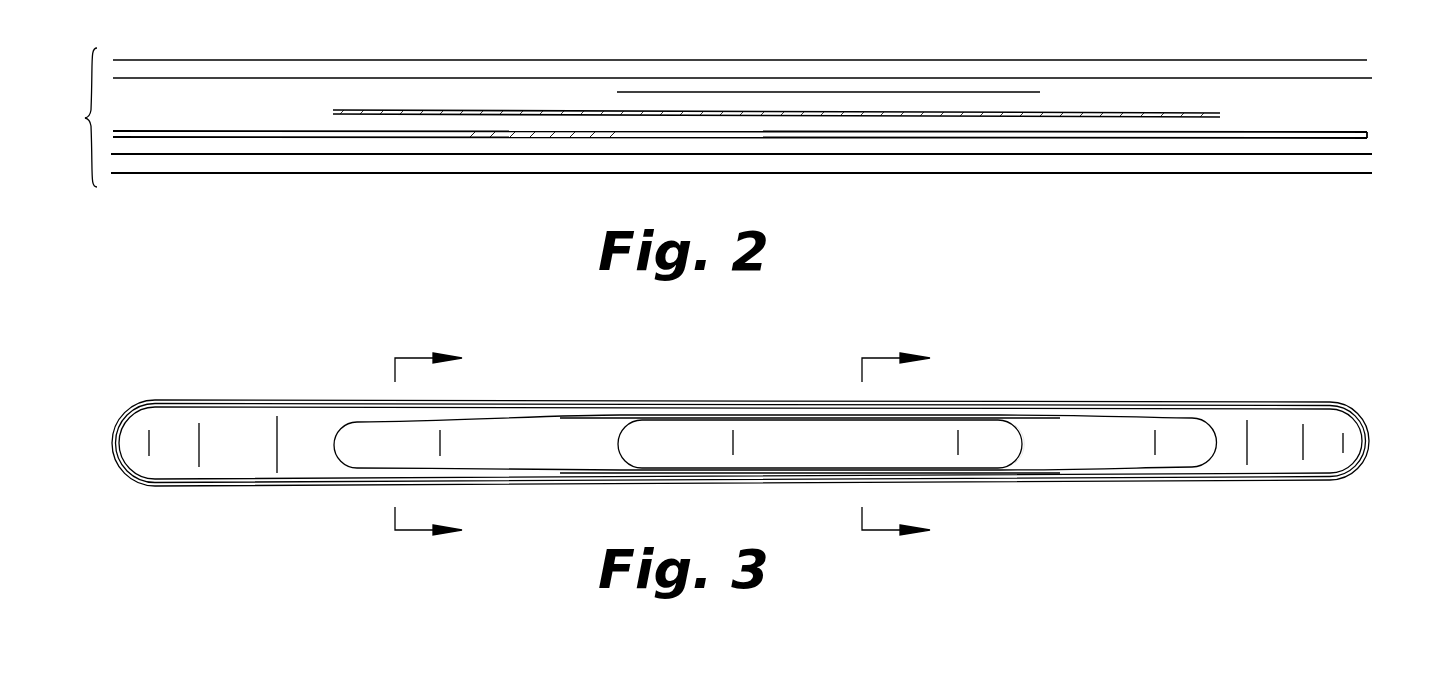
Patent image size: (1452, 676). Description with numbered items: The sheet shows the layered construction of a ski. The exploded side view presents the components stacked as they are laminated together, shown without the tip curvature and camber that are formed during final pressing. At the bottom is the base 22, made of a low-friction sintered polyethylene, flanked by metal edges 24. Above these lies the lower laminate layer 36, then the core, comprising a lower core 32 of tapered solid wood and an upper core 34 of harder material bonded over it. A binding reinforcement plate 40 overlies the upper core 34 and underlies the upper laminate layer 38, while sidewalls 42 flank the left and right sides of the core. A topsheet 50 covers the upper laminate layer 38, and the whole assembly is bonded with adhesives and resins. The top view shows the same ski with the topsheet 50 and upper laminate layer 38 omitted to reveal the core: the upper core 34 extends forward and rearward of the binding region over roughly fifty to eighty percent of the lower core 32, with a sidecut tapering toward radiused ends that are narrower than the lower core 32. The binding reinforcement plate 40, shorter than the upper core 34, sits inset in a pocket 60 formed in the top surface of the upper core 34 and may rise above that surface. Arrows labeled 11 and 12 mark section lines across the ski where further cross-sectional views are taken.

In FIG. 2, the base 22 is at (1325, 175).
In FIG. 2, the metal edges 24 is at (1372, 173).
In FIG. 2, the lower core 32 is at (1305, 135).
In FIG. 3, the lower core 32 is at (237, 457).
In FIG. 2, the upper core 34 is at (1220, 115).
In FIG. 3, the upper core 34 is at (560, 445).
In FIG. 2, the lower laminate layer 36 is at (1372, 154).
In FIG. 2, the upper laminate layer 38 is at (1372, 78).
In FIG. 2, the binding reinforcement plate 40 is at (1040, 92).
In FIG. 3, the binding reinforcement plate 40 is at (985, 447).
In FIG. 2, the sidewalls 42 is at (1367, 137).
In FIG. 3, the sidewalls 42 is at (1327, 480).
In FIG. 2, the topsheet 50 is at (1273, 60).
In FIG. 3, the pocket 60 is at (830, 452).
In FIG. 3, the section line 11- 11 is at (451, 449).
In FIG. 3, the section line 12- 12 is at (919, 449).